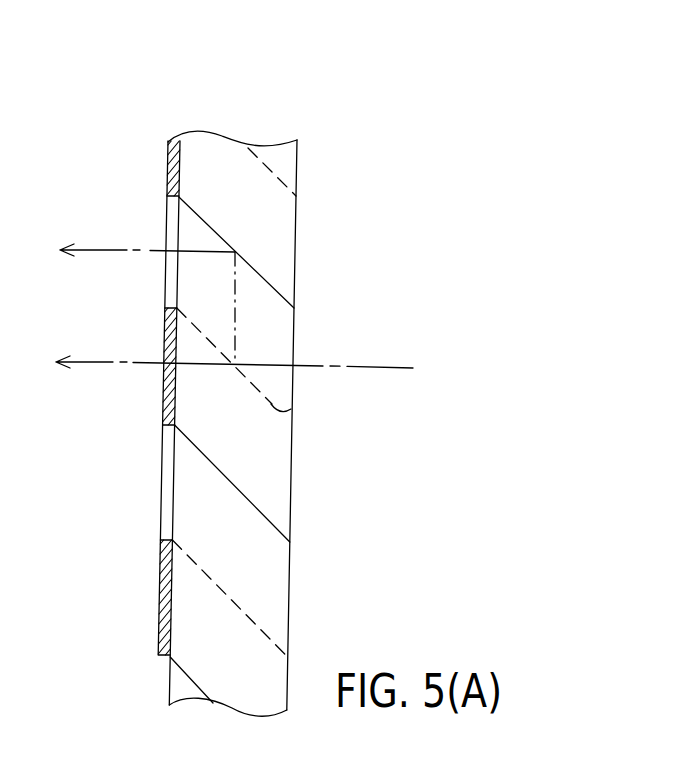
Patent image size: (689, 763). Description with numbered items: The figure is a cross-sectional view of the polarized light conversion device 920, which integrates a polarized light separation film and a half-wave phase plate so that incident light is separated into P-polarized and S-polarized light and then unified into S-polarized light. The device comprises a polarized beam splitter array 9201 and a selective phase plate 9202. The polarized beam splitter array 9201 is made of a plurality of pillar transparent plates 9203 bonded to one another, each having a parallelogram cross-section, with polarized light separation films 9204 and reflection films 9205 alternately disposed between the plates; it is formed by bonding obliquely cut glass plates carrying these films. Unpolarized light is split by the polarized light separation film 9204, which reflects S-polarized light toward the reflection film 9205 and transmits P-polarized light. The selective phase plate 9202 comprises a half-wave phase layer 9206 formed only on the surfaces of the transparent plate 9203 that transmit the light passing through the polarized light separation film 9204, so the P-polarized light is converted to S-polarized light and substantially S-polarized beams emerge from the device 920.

The polarized light conversion device 920 is at (362, 101).
The polarized beam splitter array 9201 is at (293, 116).
The selective phase plate 9202 is at (178, 138).
The pillar transparent plate 9203 is at (283, 240).
The polarized light separation film 9204 is at (291, 409).
The reflection film 9205 is at (266, 282).
The λ/2 phase layer 9206 is at (170, 163).